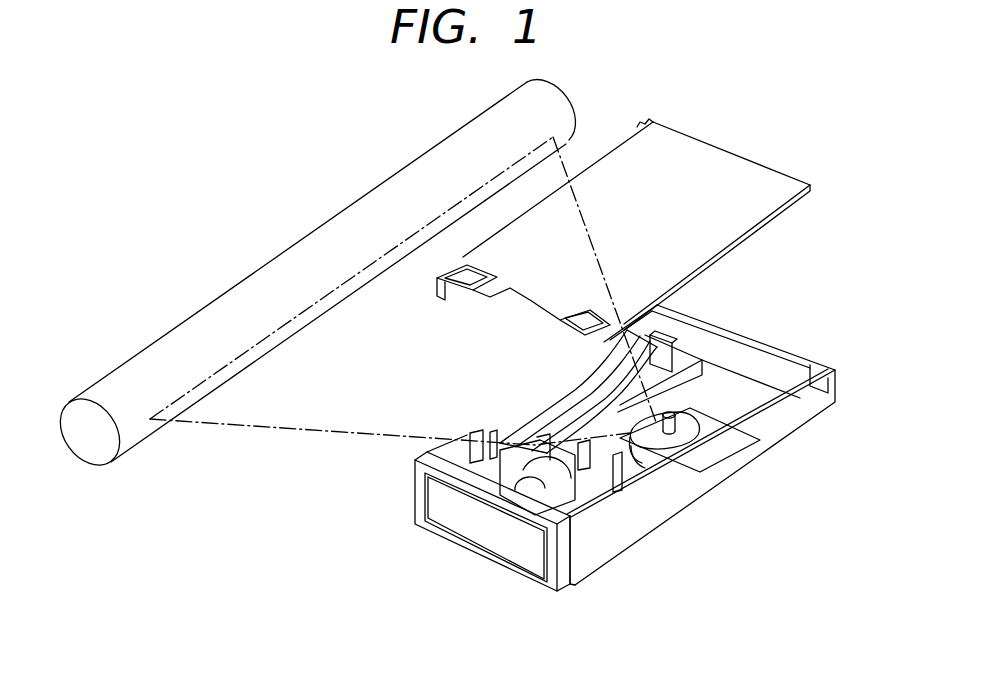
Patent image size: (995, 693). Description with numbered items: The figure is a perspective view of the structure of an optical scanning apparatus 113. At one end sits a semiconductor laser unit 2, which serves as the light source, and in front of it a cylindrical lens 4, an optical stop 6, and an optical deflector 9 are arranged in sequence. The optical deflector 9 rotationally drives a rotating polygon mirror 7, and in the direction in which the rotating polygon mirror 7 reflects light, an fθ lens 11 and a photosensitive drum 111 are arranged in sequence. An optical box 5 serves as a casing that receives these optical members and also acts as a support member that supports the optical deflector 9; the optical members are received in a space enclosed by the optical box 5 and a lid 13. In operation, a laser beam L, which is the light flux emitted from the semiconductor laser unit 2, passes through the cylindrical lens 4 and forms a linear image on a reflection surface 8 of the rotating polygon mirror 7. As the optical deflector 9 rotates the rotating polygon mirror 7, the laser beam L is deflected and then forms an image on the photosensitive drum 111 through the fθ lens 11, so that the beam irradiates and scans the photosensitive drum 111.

The semiconductor laser unit 2 is at (413, 495).
The cylindrical lens 4 is at (592, 455).
The optical box 5 is at (592, 553).
The optical stop 6 is at (630, 450).
The rotating polygon mirror 7 is at (690, 428).
The reflection surface 8 is at (652, 433).
The optical deflector 9 is at (688, 412).
The fθ lens 11 is at (528, 413).
The lid 13 is at (690, 172).
The photosensitive drum 111 is at (232, 290).
The optical scanning apparatus 113 is at (762, 321).
The laser beam L is at (656, 447).